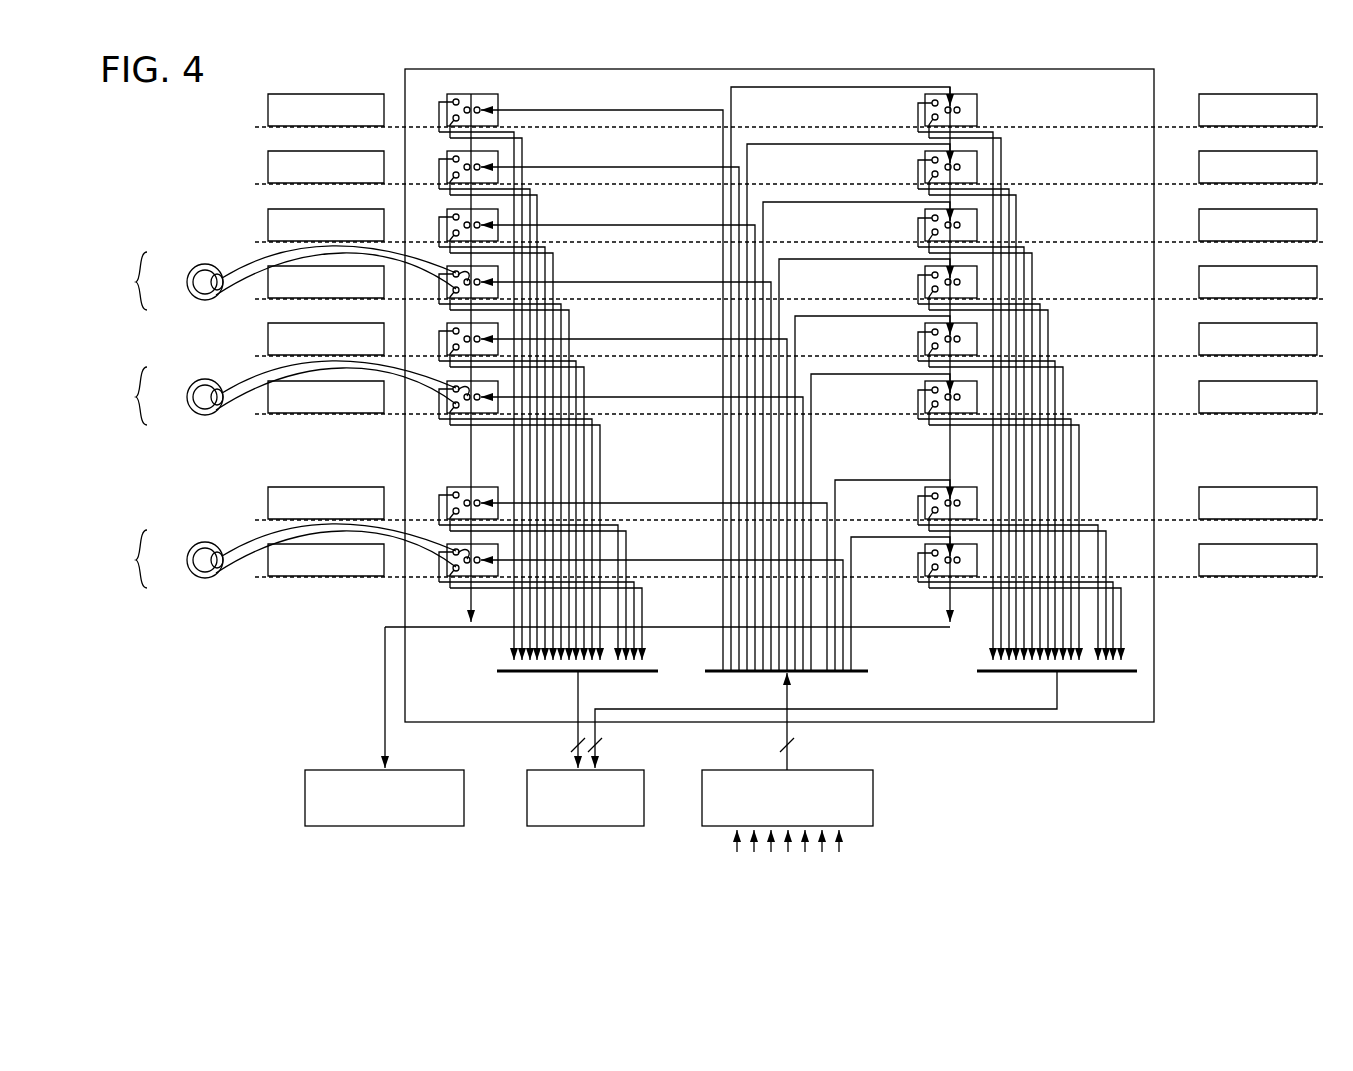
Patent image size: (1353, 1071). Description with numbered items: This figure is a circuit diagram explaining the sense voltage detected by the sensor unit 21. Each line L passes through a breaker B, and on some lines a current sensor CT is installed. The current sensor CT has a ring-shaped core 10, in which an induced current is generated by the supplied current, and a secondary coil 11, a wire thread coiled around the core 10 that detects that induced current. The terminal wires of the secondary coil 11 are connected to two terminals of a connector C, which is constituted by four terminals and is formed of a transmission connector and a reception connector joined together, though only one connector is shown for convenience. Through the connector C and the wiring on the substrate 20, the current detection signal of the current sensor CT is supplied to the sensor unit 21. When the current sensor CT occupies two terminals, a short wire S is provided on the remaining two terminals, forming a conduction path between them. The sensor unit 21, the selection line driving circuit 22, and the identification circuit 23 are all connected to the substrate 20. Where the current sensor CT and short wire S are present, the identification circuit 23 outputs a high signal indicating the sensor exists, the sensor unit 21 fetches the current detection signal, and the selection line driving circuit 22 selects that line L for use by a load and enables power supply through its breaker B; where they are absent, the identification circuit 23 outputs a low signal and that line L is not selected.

The core 10 is at (185, 414).
The secondary coil 11 is at (302, 419).
The substrate 20 is at (405, 600).
The sensor unit 21 is at (555, 770).
The selection line driving circuit 22 is at (755, 770).
The identification circuit 23 is at (355, 770).
The breaker B is at (328, 92).
The connector C is at (478, 80).
The short wire S is at (472, 279).
The line L is at (820, 672).
The current sensor CT is at (126, 420).